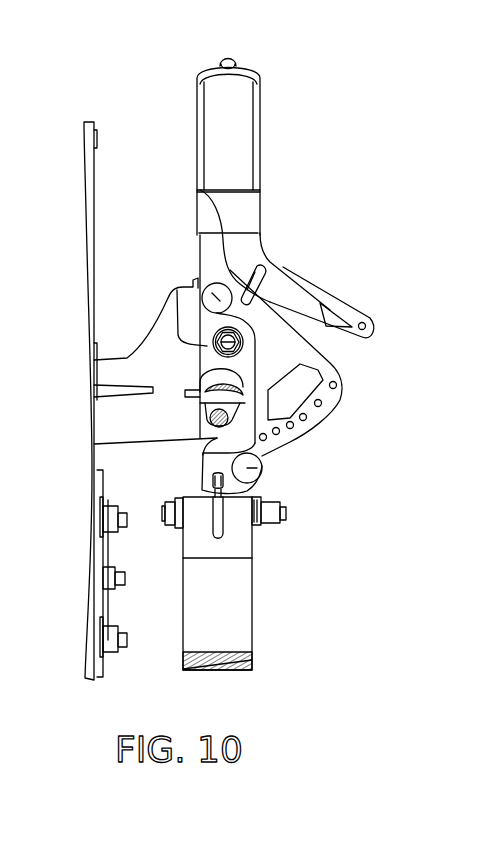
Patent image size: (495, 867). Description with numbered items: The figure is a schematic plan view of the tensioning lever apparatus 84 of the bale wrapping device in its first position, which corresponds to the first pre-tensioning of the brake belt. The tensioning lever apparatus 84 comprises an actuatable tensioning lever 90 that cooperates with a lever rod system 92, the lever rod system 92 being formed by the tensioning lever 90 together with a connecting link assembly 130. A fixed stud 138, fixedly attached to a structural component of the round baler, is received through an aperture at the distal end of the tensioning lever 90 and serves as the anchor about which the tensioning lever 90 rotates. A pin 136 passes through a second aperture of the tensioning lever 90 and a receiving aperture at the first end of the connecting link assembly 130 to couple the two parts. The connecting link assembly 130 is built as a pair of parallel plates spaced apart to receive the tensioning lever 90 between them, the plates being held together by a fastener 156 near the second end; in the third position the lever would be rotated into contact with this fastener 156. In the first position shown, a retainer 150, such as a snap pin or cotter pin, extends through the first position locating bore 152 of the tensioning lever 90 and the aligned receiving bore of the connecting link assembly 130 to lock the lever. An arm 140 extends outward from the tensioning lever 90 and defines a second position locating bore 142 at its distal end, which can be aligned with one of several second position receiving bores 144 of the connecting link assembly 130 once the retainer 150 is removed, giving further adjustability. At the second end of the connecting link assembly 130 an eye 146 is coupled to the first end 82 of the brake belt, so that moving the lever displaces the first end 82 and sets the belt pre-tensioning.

The first end 82 is at (197, 495).
The tensioning lever apparatus 84 is at (301, 168).
The tensioning lever 90 is at (223, 127).
The lever rod system 92 is at (347, 420).
The connecting link assembly 130 is at (330, 358).
The pin 136 is at (210, 284).
The fixed stud 138 is at (177, 288).
The arm 140 is at (320, 293).
The second position locating bore 142 is at (364, 322).
The second position receiving bore 144 is at (304, 415).
The eye 146 is at (220, 520).
The retainer 150 is at (200, 190).
The first position locating bore 152 is at (262, 302).
The fastener 156 is at (262, 469).